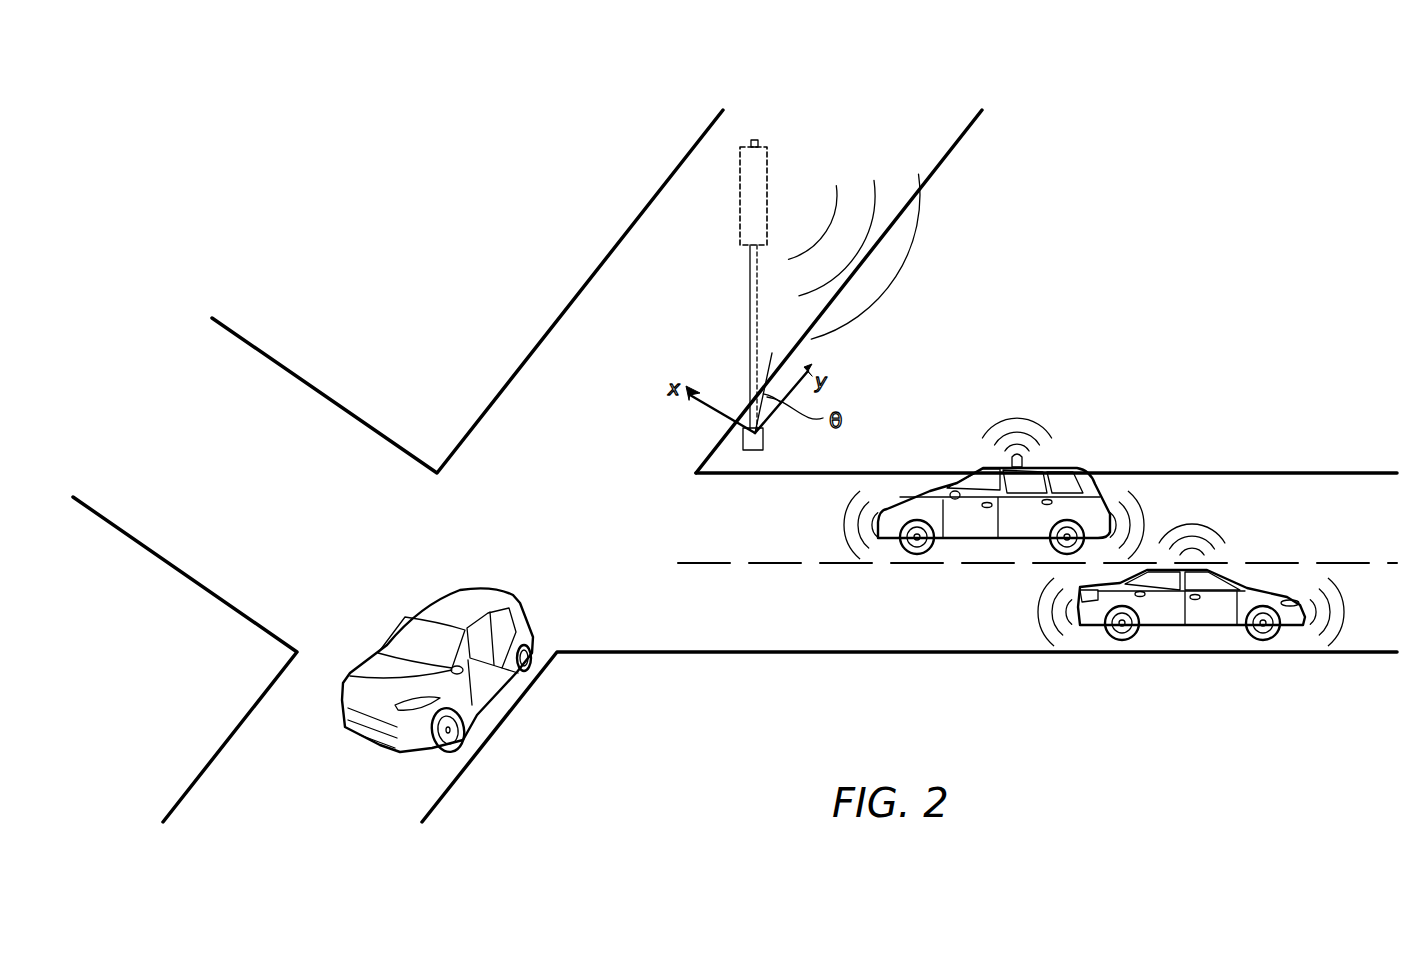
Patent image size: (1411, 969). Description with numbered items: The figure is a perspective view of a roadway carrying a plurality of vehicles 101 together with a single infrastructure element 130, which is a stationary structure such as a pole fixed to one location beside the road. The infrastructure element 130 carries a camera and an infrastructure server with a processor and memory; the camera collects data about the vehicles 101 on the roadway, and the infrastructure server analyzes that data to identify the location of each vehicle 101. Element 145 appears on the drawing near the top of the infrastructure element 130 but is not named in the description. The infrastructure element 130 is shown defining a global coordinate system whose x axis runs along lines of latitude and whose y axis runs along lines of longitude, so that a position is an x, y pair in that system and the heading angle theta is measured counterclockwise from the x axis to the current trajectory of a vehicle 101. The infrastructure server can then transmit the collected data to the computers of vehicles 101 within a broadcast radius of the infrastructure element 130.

The vehicle 101 is at (477, 677).
The infrastructure element 130 is at (768, 160).
The infrastructure communication node 145 is at (755, 140).